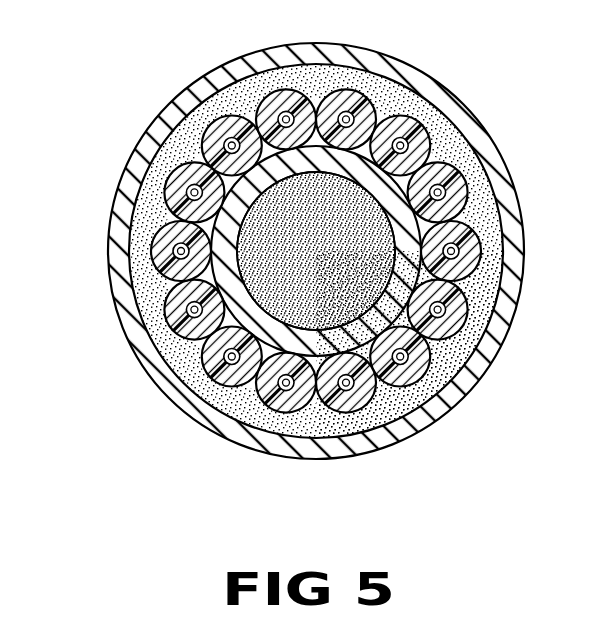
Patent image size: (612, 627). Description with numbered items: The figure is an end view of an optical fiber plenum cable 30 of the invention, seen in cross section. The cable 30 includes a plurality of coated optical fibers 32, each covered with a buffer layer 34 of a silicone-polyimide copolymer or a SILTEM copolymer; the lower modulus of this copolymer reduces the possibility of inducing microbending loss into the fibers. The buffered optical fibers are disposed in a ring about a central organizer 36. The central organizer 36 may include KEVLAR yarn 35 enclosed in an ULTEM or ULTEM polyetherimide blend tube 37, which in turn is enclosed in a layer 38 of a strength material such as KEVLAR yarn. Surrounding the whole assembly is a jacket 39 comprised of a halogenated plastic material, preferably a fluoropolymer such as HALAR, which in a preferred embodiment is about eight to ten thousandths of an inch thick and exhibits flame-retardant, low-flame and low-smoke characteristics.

The optical fiber plenum cable 30 is at (153, 55).
The coated optical fiber 32 is at (462, 358).
The buffer layer 34 is at (457, 317).
The KEVLAR yarn 35 is at (247, 225).
The central organizer 36 is at (214, 268).
The polyetherimide tube 37 is at (245, 313).
The strength material layer 38 is at (427, 110).
The jacket 39 is at (512, 212).